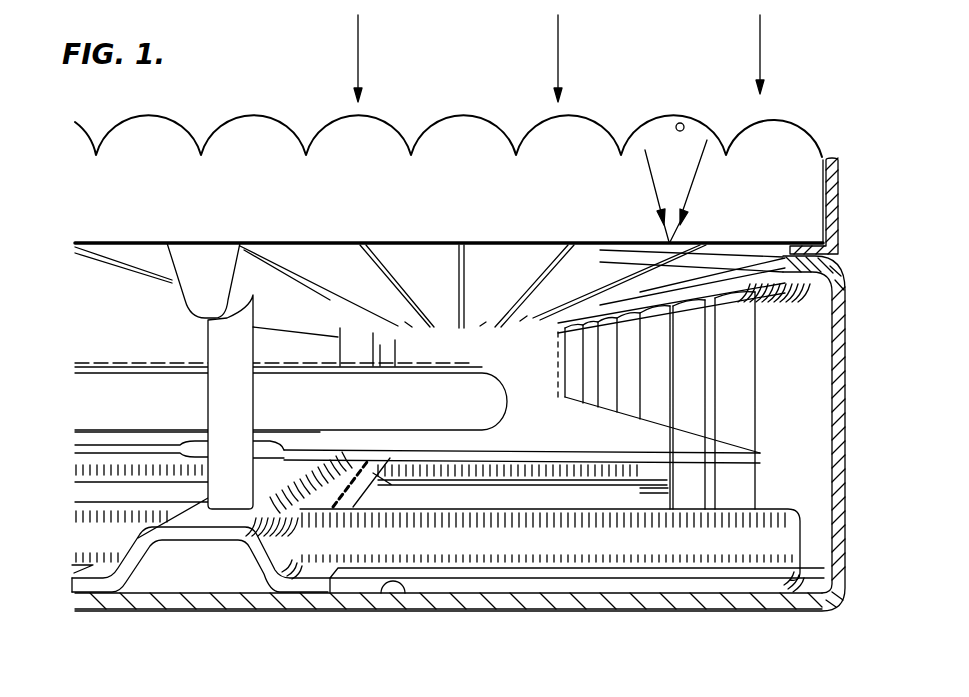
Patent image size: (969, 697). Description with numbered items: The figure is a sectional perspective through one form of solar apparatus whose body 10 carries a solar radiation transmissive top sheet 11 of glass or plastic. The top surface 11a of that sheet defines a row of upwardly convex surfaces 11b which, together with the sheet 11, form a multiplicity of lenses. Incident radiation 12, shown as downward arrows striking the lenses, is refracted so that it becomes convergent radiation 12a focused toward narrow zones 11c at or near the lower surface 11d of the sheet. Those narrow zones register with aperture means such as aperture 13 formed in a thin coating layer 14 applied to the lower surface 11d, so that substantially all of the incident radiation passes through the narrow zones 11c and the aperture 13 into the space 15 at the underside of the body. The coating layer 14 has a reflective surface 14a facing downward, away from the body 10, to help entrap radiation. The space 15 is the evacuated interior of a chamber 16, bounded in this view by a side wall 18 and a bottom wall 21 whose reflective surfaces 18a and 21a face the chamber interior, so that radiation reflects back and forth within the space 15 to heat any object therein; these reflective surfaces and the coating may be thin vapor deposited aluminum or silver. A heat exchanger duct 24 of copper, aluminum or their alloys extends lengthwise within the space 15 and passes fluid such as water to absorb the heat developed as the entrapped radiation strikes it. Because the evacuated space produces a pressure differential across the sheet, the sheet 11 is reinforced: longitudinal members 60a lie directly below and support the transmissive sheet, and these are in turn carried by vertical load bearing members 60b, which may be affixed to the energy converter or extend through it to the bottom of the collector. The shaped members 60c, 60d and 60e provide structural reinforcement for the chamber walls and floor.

The body 10 is at (620, 80).
The solar radiation transmissive top sheet 11 is at (444, 125).
The top surface 11a is at (481, 116).
The upwardly convex surfaces 11b is at (265, 100).
The narrow zones 11c is at (680, 243).
The lower surface 11d is at (681, 122).
The incident radiation 12 is at (358, 50).
The convergent radiation 12a is at (648, 181).
The aperture 13 is at (360, 245).
The coating layer 14 is at (410, 240).
The reflective surface 14a is at (505, 262).
The space 15 is at (390, 303).
The chamber 16 is at (549, 632).
The side wall 18 is at (846, 398).
The reflective surface 18a is at (824, 346).
The bottom wall 21 is at (365, 612).
The reflective surface 21a is at (398, 600).
The heat exchanger duct 24 is at (417, 413).
The longitudinal members 60a is at (183, 297).
The vertical load bearing members 60b is at (222, 340).
The reinforcing member 60c is at (747, 413).
The reinforcing member 60d is at (128, 542).
The reinforcing member 60e is at (614, 545).